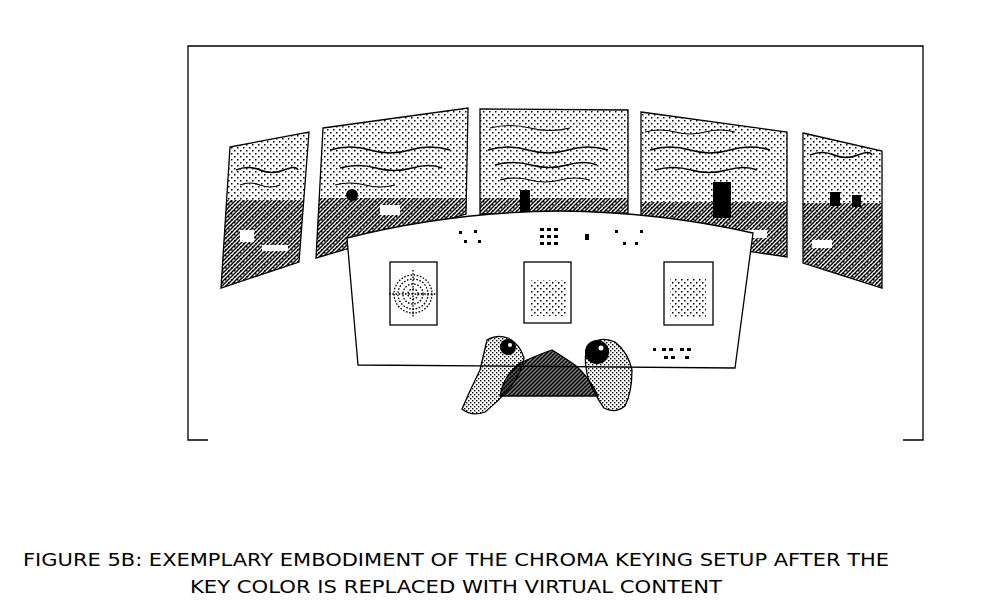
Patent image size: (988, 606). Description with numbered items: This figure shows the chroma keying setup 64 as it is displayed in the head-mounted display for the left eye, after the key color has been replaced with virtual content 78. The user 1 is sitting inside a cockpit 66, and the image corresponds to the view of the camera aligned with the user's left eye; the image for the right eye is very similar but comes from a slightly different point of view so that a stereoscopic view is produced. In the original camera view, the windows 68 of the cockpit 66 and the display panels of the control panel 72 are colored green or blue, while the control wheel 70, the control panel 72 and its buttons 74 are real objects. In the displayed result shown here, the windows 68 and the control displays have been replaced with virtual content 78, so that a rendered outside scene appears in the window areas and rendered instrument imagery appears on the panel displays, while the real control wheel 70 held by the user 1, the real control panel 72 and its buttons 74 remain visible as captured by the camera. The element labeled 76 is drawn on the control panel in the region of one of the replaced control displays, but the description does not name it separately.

The user 1 is at (485, 405).
The chroma keying setup 64 is at (150, 66).
The cockpit 66 is at (186, 112).
The windows 68 is at (223, 270).
The control wheel 70 is at (567, 398).
The control panel 72 is at (390, 345).
The buttons 74 is at (672, 352).
The instrument display 76 is at (690, 315).
The virtual content 78 is at (494, 254).